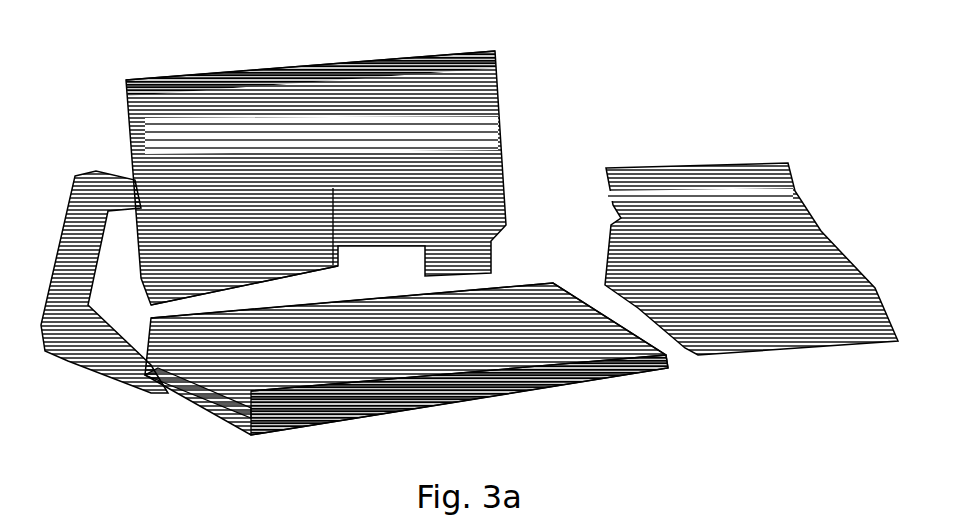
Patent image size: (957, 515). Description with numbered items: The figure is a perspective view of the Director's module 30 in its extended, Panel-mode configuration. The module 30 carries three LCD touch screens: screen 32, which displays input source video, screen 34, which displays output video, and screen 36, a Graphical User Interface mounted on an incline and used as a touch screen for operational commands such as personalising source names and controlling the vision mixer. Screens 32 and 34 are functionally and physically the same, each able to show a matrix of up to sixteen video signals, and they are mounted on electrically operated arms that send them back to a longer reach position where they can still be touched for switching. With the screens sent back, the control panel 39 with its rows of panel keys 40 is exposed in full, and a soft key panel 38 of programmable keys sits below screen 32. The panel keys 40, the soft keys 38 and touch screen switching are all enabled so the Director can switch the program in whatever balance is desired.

The Director's module 30 is at (700, 475).
The LCD touch screen 32 is at (316, 168).
The LCD touch screen 34 is at (380, 48).
The Graphical User Interface touch screen 36 is at (803, 207).
The soft key panel 38 is at (167, 303).
The control panel 39 is at (270, 420).
The panel keys 40 is at (332, 385).